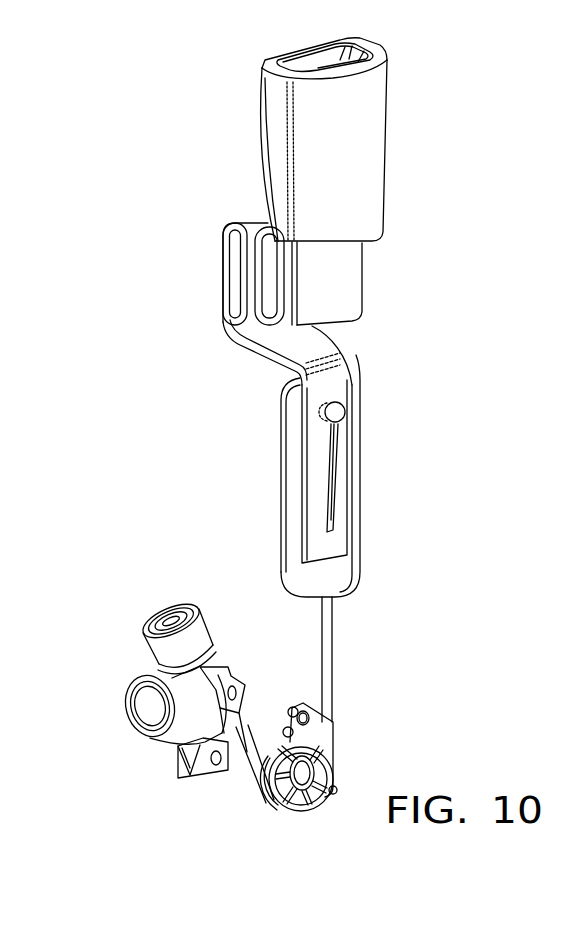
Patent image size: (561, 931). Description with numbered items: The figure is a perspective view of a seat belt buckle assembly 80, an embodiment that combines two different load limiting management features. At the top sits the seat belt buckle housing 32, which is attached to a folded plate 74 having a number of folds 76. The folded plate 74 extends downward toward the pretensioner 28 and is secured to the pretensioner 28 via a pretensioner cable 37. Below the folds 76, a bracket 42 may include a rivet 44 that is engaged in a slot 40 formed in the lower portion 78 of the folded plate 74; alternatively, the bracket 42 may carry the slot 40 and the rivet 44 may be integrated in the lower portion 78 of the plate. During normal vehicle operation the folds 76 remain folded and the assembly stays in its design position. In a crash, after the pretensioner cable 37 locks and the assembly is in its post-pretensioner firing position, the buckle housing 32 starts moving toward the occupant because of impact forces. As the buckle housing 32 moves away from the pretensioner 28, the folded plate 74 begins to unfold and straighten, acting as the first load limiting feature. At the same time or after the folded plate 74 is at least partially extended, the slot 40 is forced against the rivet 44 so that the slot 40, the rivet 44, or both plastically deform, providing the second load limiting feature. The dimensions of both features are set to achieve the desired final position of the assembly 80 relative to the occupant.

The seat belt buckle assembly 80 is at (427, 67).
The seat belt buckle housing 32 is at (387, 153).
The folded plate 74 is at (365, 270).
The folds 76 is at (282, 303).
The bracket 42 is at (362, 487).
The lower portion of the folded plate 78 is at (345, 490).
The rivet 44 is at (345, 418).
The slot 40 is at (328, 450).
The pretensioner cable 37 is at (333, 665).
The pretensioner 28 is at (210, 645).